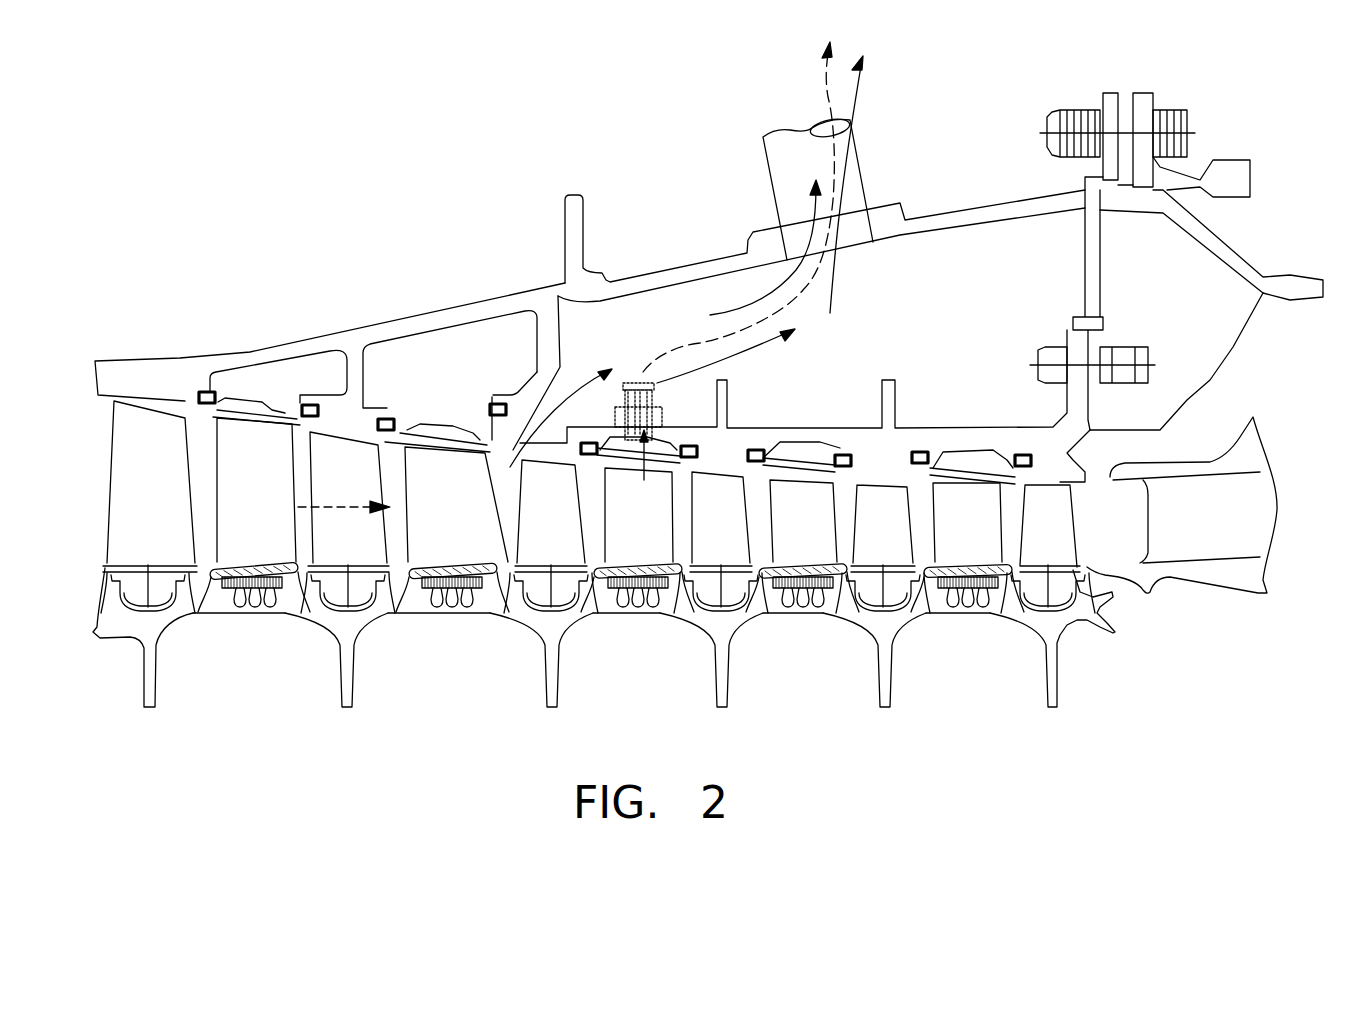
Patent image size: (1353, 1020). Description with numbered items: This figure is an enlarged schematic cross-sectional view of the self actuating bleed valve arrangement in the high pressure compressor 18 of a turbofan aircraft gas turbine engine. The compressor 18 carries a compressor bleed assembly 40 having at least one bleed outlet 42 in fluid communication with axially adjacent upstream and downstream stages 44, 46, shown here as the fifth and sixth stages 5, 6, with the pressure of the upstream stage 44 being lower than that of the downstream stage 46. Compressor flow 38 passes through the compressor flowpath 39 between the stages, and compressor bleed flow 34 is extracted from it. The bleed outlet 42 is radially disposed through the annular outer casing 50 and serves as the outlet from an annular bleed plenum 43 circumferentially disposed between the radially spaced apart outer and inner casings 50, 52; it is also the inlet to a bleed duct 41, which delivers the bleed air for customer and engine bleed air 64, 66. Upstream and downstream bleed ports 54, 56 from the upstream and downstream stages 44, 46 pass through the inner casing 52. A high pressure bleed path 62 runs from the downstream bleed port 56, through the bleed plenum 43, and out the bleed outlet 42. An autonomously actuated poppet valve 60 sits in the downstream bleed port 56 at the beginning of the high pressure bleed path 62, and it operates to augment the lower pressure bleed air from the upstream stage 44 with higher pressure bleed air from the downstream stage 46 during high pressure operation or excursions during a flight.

The high pressure compressor 18 is at (398, 773).
The compressor bleed flow 34 is at (770, 293).
The compressor flow 38 is at (332, 508).
The compressor flowpath 39 is at (216, 498).
The compressor bleed assembly 40 is at (717, 242).
The bleed duct 41 is at (857, 147).
The bleed outlet 42 is at (877, 195).
The bleed plenum 43 is at (962, 291).
The upstream stage 44 is at (463, 410).
The downstream stage 46 is at (667, 425).
The outer casing 50 is at (972, 208).
The inner casing 52 is at (935, 438).
The upstream bleed port 54 is at (510, 457).
The downstream bleed port 56 is at (638, 447).
The poppet valve 60 is at (622, 388).
The high pressure bleed path 62 is at (687, 342).
The customer bleed air 64 is at (850, 84).
The engine bleed air 66 is at (812, 83).
The fifth stage 5 is at (443, 547).
The sixth stage 6 is at (633, 553).